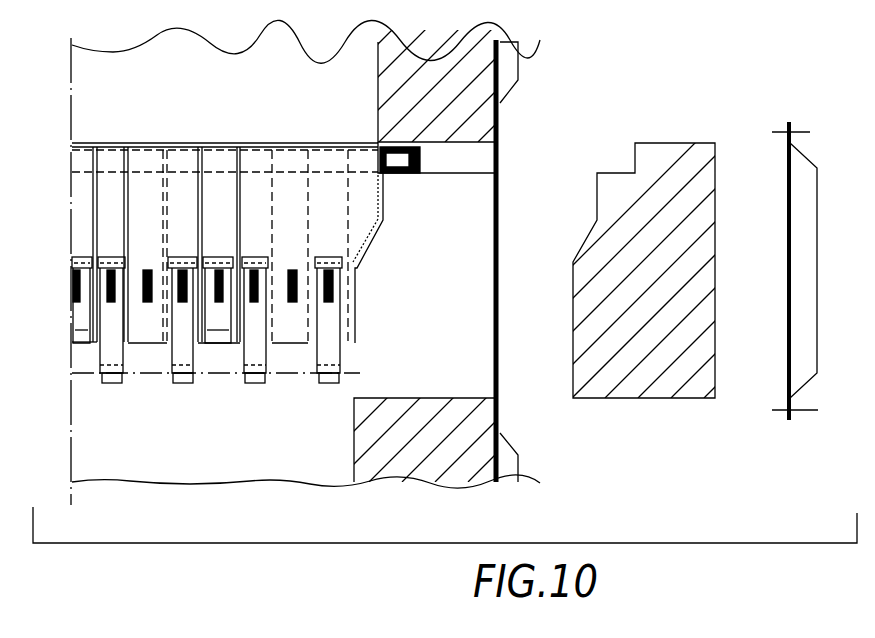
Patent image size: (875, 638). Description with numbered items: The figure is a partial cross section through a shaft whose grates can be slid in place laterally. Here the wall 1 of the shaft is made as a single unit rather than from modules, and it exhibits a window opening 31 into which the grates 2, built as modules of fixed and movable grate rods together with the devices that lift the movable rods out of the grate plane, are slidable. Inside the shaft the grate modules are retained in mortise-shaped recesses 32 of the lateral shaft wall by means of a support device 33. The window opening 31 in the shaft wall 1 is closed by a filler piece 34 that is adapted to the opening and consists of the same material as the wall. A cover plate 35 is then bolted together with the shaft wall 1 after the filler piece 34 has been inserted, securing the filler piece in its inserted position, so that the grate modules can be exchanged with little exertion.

The wall of the shaft 1 is at (423, 465).
The grates 2 is at (360, 263).
The window opening 31 is at (453, 363).
The mortise-shaped recesses 32 is at (470, 157).
The support device 33 is at (400, 174).
The filler piece 34 is at (647, 380).
The cover plate 35 is at (797, 368).